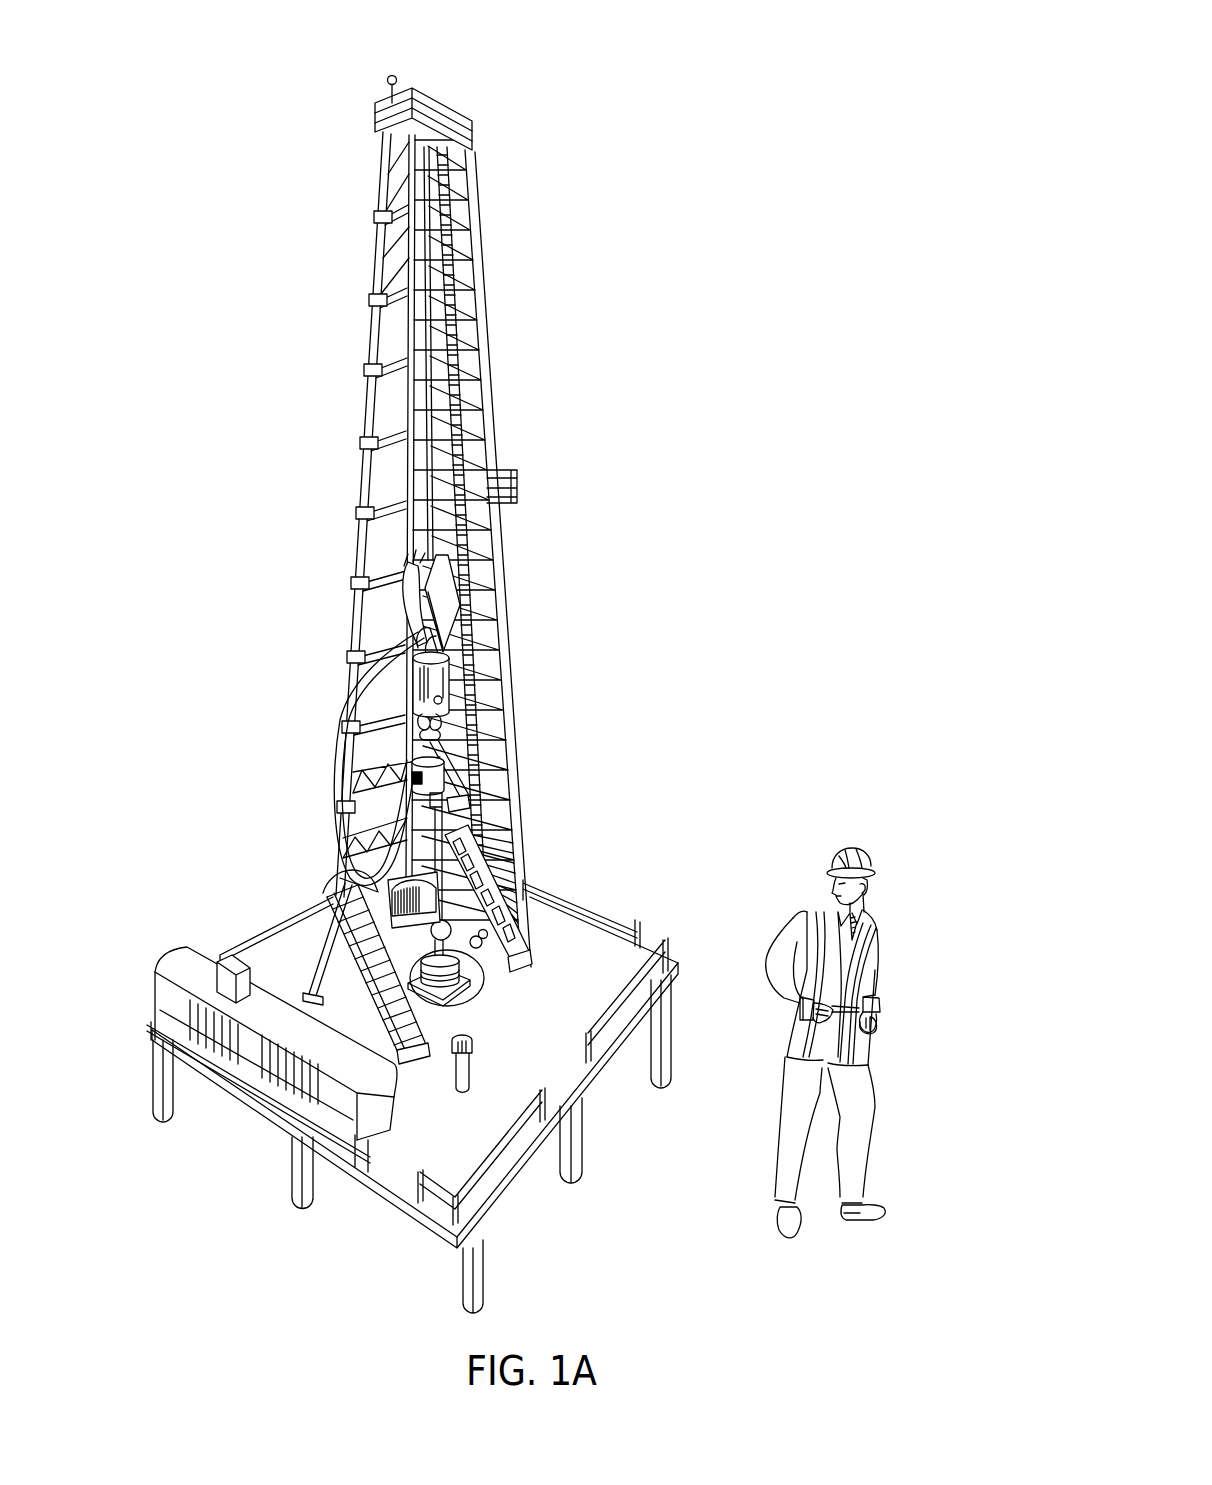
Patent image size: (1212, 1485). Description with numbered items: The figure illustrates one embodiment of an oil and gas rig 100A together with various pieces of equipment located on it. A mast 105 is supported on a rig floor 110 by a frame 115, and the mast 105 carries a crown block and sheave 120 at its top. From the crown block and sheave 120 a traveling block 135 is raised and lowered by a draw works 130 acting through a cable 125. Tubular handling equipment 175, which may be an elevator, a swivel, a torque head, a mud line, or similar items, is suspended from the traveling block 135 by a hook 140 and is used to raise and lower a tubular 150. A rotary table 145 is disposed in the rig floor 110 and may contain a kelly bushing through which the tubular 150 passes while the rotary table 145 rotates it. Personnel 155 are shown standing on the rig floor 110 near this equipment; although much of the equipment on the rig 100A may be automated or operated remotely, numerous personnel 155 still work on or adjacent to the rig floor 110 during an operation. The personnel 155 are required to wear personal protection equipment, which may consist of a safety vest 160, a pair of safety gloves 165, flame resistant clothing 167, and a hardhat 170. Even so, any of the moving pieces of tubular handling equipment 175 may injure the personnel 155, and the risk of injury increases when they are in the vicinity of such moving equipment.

The oil and gas rig 100A is at (750, 85).
The mast 105 is at (470, 272).
The rig floor 110 is at (538, 1073).
The frame 115 is at (519, 947).
The crown block and sheave 120 is at (452, 141).
The cable 125 is at (410, 684).
The draw works 130 is at (325, 893).
The traveling block 135 is at (447, 598).
The hook 140 is at (484, 751).
The rotary table 145 is at (486, 982).
The tubular 150 is at (487, 952).
The personnel 155 is at (900, 1132).
The safety vest 160 is at (817, 913).
The pair of safety gloves 165 is at (879, 1024).
The flame resistant clothing 167 is at (787, 918).
The hardhat 170 is at (868, 862).
The tubular handling equipment 175 is at (337, 822).